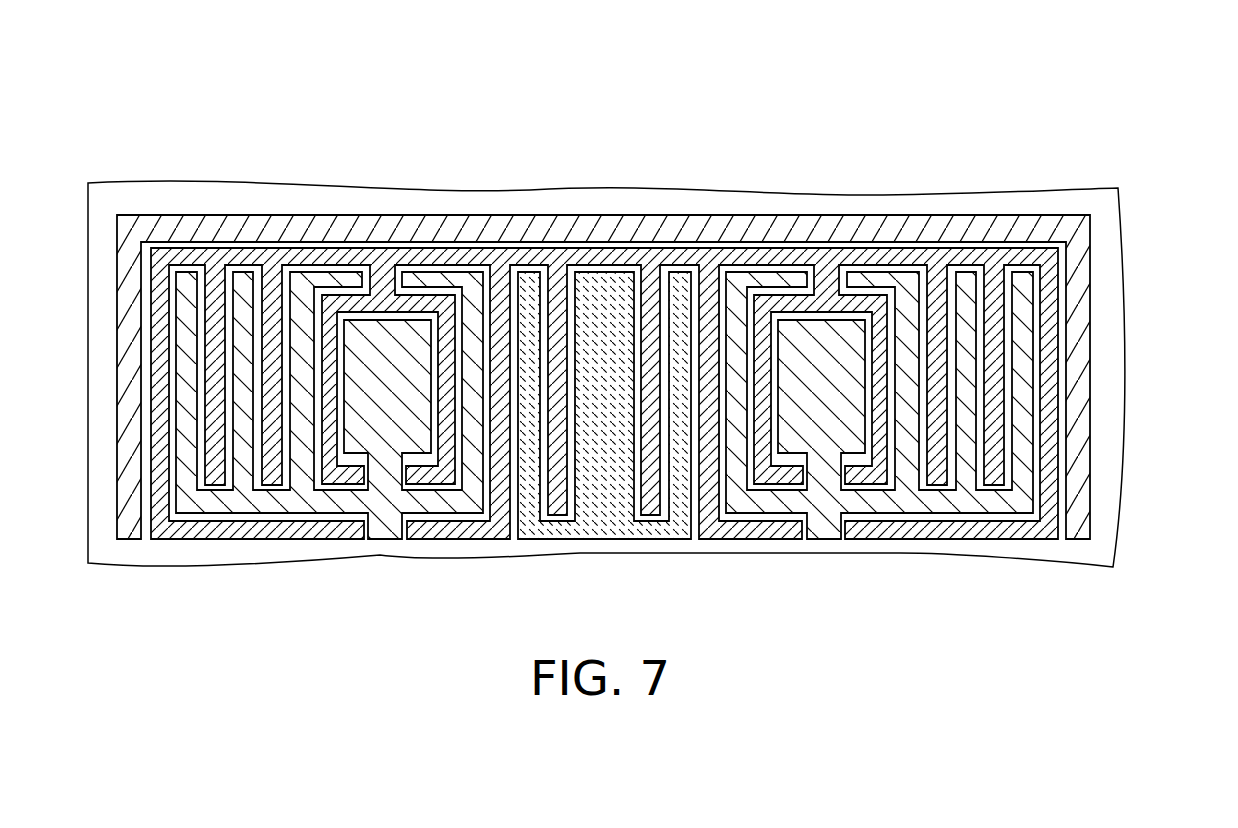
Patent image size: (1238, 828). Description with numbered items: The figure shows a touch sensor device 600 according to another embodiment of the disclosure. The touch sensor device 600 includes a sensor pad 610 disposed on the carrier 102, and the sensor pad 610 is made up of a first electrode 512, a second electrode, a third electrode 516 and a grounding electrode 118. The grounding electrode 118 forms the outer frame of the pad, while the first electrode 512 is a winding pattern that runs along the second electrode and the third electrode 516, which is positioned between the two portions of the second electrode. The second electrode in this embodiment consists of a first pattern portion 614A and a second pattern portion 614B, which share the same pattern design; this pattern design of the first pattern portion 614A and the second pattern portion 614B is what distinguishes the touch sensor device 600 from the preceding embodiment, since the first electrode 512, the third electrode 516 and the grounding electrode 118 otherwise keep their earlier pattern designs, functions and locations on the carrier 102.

The carrier 102 is at (1110, 487).
The grounding electrode 118 is at (176, 228).
The first electrode 512 is at (325, 258).
The third electrode 516 is at (604, 323).
The sensor pad 610 is at (603, 271).
The first pattern portion 614A is at (383, 345).
The second pattern portion 614B is at (824, 345).
The touch sensor device 600 is at (647, 324).